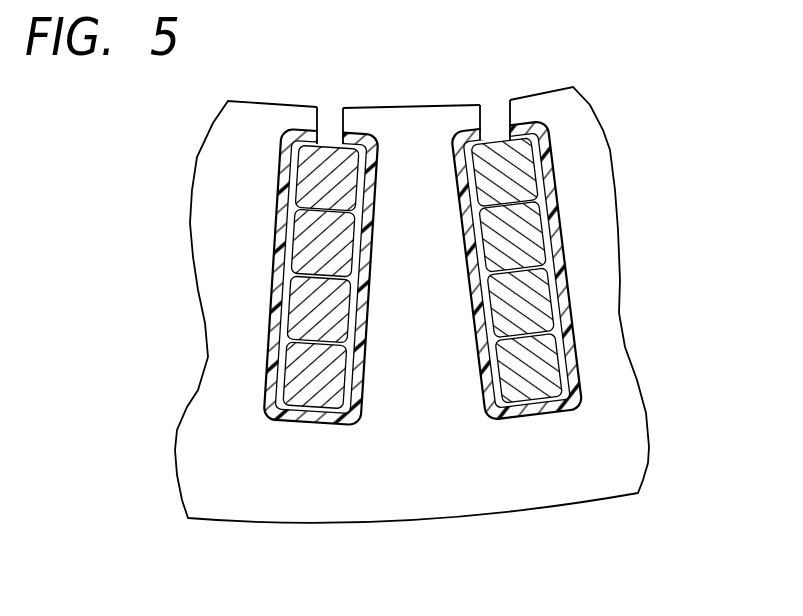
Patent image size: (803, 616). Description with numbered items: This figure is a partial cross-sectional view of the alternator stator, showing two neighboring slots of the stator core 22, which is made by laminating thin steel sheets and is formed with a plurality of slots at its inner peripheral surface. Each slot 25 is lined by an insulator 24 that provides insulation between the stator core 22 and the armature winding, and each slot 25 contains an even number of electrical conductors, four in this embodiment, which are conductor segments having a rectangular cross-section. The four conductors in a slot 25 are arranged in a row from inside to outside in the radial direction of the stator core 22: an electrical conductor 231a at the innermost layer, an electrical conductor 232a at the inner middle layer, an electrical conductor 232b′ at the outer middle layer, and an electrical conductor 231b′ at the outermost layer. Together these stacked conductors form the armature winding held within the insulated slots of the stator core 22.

The stator core 22 is at (428, 495).
The insulator 24 is at (327, 420).
The slot 25 is at (333, 122).
The electrical conductor at innermost layer 231a is at (510, 172).
The electrical conductor at inner middle layer 232a is at (518, 230).
The electrical conductor at outer middle layer 232b′ is at (540, 303).
The electrical conductor at outermost layer 231b′ is at (555, 375).